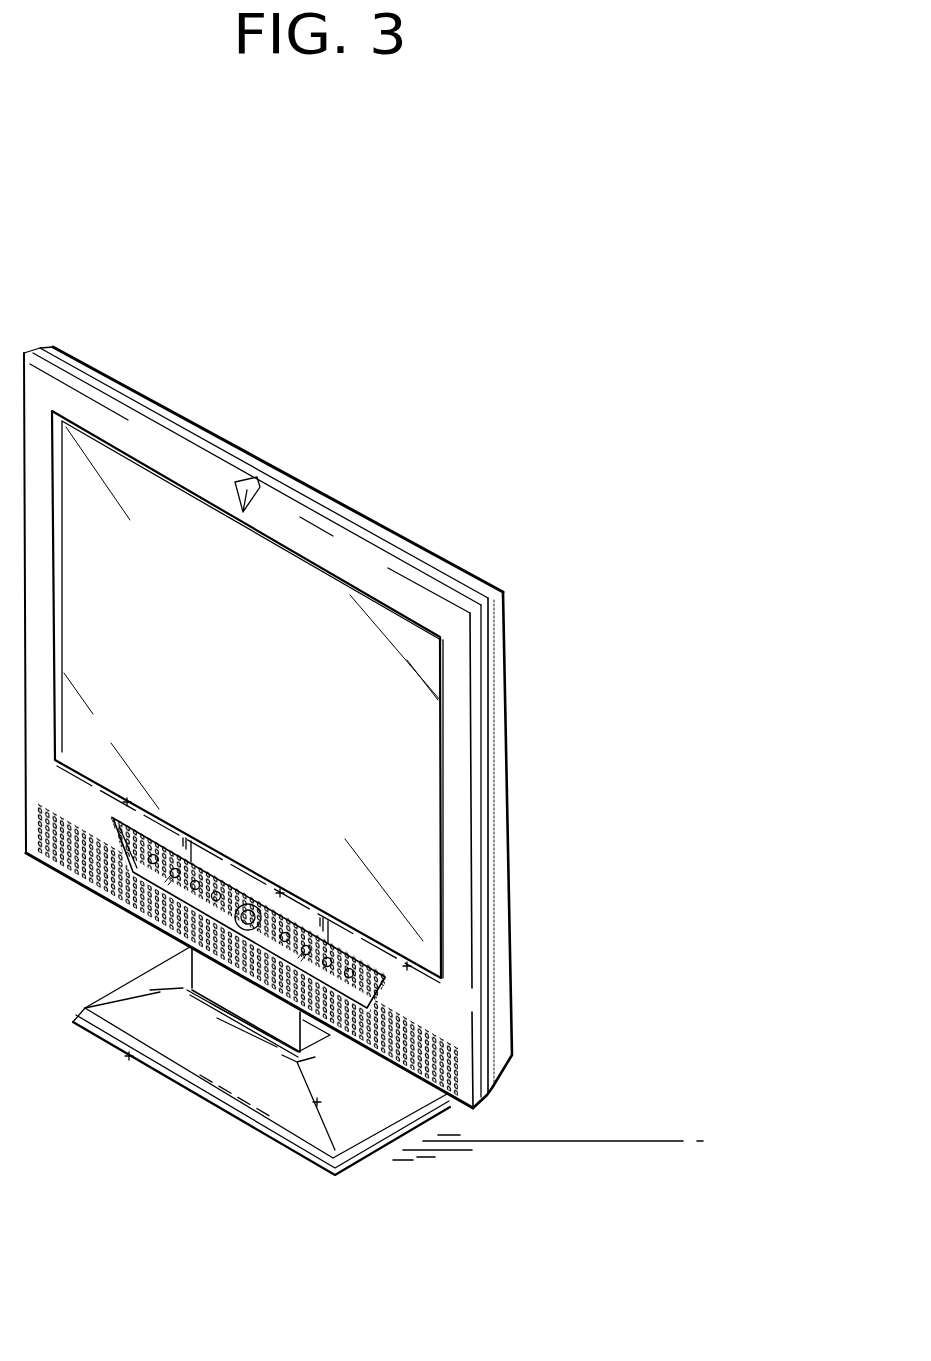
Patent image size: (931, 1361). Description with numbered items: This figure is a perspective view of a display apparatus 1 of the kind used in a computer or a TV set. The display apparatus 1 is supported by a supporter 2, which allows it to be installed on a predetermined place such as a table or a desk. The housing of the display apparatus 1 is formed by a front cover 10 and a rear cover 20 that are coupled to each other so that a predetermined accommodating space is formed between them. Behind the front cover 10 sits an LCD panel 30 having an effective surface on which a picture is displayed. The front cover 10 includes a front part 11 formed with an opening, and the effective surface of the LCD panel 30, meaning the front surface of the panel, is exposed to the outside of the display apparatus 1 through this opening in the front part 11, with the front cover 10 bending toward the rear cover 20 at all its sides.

The display apparatus 1 is at (312, 727).
The supporter 2 is at (351, 1170).
The front cover 10 is at (463, 788).
The front part 11 is at (477, 1008).
The rear cover 20 is at (497, 702).
The LCD panel 30 is at (415, 883).